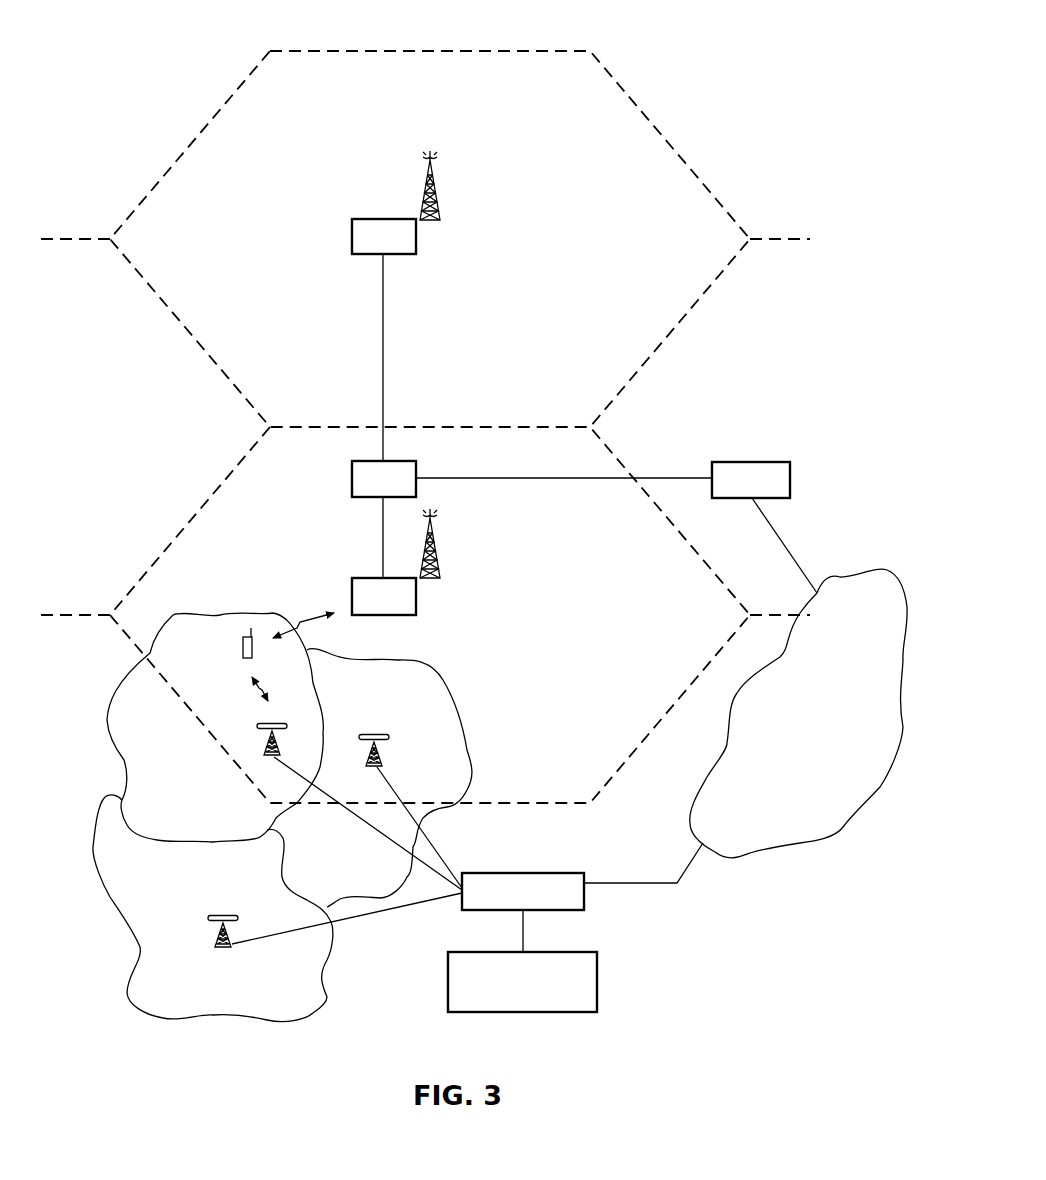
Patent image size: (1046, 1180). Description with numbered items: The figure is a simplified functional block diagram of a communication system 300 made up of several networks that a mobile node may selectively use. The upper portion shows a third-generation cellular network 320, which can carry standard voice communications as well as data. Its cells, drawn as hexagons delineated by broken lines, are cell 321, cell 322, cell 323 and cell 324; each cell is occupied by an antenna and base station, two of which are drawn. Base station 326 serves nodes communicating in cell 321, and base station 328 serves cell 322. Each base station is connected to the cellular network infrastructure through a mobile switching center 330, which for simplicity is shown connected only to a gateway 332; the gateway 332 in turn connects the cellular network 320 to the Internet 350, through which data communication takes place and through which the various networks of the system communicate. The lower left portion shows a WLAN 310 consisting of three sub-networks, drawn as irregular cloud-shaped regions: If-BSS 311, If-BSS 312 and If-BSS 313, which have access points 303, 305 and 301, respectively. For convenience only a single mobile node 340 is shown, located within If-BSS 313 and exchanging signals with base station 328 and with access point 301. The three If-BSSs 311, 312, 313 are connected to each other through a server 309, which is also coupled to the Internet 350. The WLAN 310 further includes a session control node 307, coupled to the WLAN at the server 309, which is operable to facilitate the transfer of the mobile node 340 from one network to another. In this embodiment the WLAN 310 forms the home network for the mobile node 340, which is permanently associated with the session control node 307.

The communication system 300 is at (714, 125).
The WLAN 310 is at (381, 972).
The 3G cellular network 320 is at (335, 207).
The cell 321 is at (449, 73).
The cell 322 is at (565, 542).
The cell 323 is at (722, 377).
The cell 324 is at (160, 375).
The base station 326 is at (352, 238).
The base station 328 is at (352, 597).
The mobile switching center 330 is at (352, 479).
The gateway 332 is at (755, 462).
The Internet 350 is at (807, 756).
The access point 301 is at (262, 743).
The access point 303 is at (384, 750).
The access point 305 is at (218, 949).
The If-BSS 311 is at (375, 696).
The If-BSS 312 is at (154, 870).
The If-BSS 313 is at (186, 800).
The mobile node 340 is at (242, 646).
The server 309 is at (585, 898).
The session control node 307 is at (598, 978).